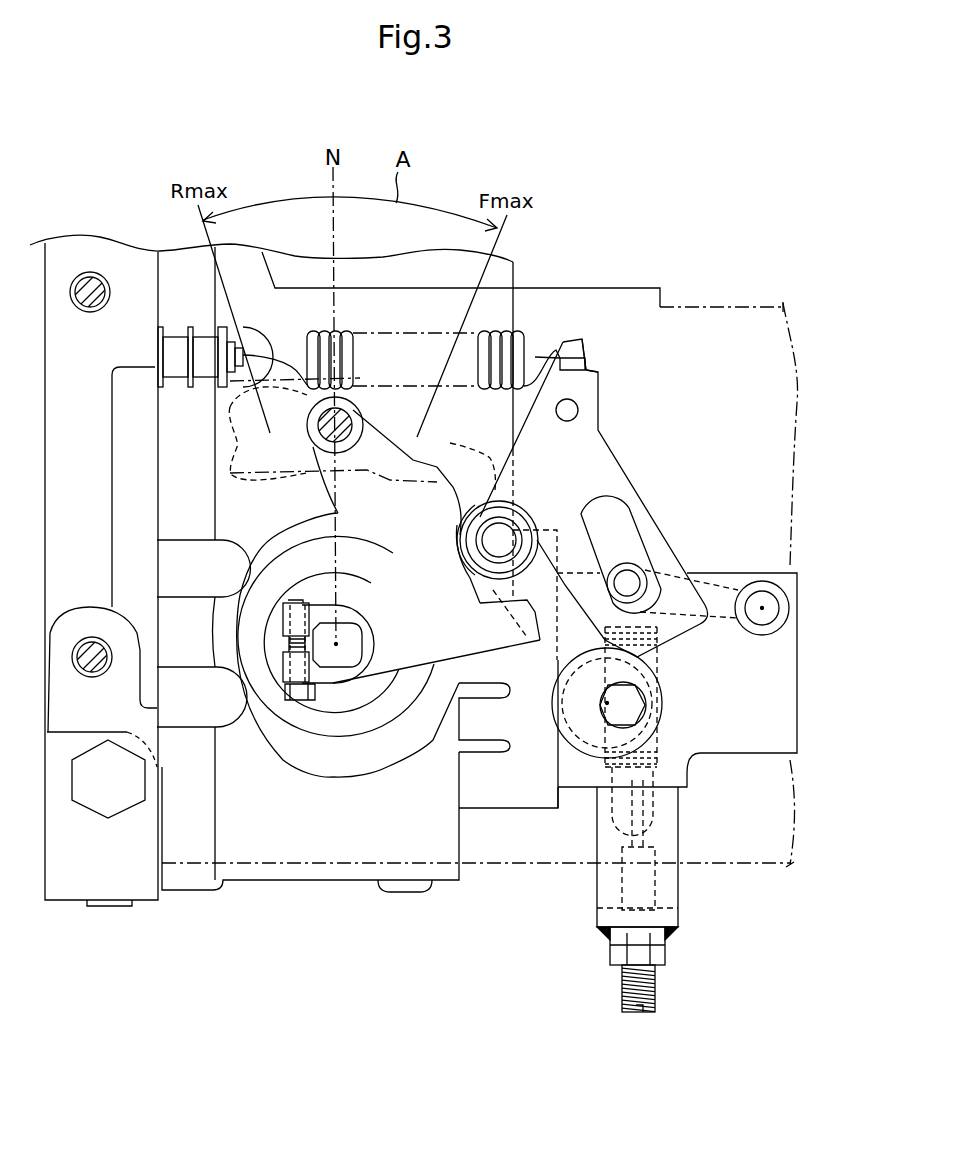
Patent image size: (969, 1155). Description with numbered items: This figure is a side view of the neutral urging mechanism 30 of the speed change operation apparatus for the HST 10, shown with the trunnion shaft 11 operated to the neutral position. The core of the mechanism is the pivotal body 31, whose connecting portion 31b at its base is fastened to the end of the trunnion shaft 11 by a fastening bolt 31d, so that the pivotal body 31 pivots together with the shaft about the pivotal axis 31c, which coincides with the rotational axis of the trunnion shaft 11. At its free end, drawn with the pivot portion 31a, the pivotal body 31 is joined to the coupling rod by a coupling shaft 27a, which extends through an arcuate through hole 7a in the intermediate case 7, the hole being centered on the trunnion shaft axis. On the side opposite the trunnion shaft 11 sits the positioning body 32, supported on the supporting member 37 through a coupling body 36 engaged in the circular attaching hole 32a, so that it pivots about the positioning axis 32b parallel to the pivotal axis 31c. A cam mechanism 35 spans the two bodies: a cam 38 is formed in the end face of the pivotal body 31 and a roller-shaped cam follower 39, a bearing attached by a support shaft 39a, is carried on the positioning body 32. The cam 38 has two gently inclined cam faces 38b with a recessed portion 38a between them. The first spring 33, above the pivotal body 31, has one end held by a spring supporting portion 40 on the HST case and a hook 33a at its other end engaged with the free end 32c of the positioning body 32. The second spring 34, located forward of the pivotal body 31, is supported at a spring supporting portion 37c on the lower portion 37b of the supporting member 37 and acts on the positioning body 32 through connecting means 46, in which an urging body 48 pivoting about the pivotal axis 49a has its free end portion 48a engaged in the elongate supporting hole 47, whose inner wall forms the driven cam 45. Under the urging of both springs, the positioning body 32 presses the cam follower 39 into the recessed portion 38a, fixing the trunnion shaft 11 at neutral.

The intermediate case 7 is at (628, 288).
The arcuate through hole 7a is at (230, 468).
The HST 10 is at (283, 882).
The trunnion shaft 11 is at (350, 632).
The coupling shaft 27a is at (320, 427).
The neutral urging mechanism 30 is at (612, 368).
The pivotal body 31 is at (320, 498).
The pivot portion 31a is at (357, 410).
The connecting portion 31b is at (333, 685).
The pivotal axis 31c is at (362, 648).
The fastening bolt 31d is at (297, 700).
The positioning body 32 is at (603, 437).
The attaching hole 32a is at (575, 700).
The positioning axis 32b is at (607, 703).
The free end 32c is at (590, 345).
The first spring 33 is at (513, 335).
The hook 33a is at (545, 357).
The second spring 34 is at (670, 760).
The cam mechanism 35 is at (540, 497).
The coupling body 36 is at (560, 690).
The supporting member 37 is at (745, 753).
The lower portion 37b is at (678, 894).
The spring supporting portion 37c is at (620, 868).
The cam 38 is at (465, 542).
The recessed portion 38a is at (468, 546).
The inclined cam face 38b is at (513, 597).
The cam follower 39 is at (538, 548).
The support shaft 39a is at (492, 548).
The spring supporting portion 40 is at (227, 390).
The driven cam 45 is at (605, 560).
The connecting means 46 is at (723, 557).
The supporting hole 47 is at (632, 535).
The urging body 48 is at (690, 620).
The free end portion 48a is at (640, 568).
The pivotal axis 49a is at (762, 610).